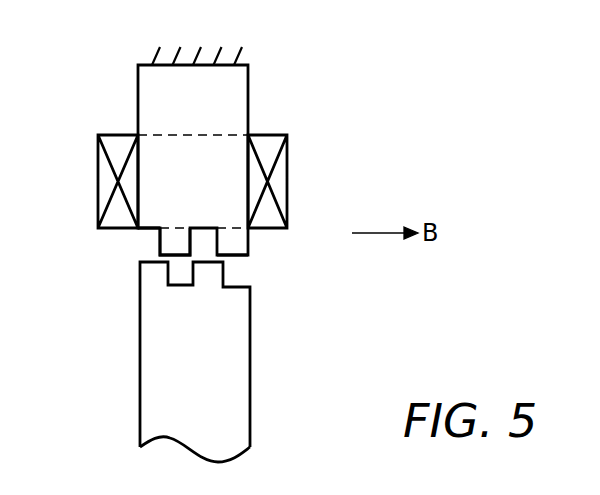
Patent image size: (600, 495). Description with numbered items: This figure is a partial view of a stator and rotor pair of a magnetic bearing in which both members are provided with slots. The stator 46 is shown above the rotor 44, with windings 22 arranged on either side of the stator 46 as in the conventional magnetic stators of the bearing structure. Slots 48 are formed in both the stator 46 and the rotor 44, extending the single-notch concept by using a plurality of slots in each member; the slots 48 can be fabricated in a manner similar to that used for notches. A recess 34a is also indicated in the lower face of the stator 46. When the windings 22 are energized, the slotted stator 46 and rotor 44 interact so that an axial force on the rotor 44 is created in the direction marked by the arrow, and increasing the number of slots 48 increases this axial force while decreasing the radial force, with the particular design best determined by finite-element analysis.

The stator 46 is at (198, 112).
The rotor 44 is at (210, 380).
The windings 22 is at (100, 160).
The slots 48 is at (148, 247).
The slot 34a is at (188, 232).